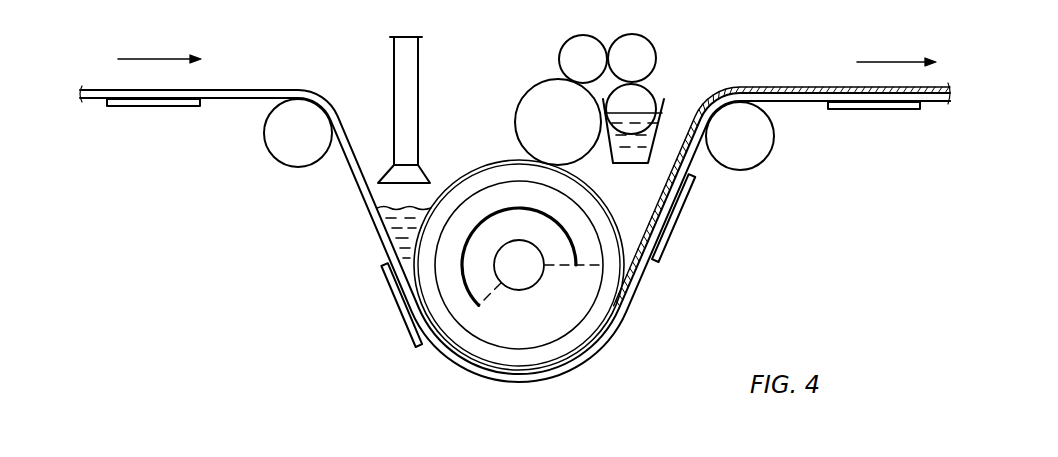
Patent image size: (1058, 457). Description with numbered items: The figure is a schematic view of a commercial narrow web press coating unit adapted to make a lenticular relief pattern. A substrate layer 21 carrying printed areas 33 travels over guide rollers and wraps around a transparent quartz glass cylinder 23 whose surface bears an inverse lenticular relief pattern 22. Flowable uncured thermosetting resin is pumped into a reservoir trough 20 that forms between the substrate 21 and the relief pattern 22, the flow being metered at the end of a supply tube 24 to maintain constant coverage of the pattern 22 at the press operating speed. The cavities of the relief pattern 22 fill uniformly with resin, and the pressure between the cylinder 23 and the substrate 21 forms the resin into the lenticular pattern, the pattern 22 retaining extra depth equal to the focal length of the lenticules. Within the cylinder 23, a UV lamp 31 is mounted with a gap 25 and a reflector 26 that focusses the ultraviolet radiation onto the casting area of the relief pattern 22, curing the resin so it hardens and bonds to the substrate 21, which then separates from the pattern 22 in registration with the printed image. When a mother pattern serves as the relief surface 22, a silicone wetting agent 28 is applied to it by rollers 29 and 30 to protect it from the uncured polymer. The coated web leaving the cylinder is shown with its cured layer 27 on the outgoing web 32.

The reservoir trough 20 is at (397, 230).
The substrate layer 21 is at (235, 99).
The relief pattern 22 is at (560, 365).
The quartz glass cylinder 23 is at (500, 355).
The supply tube 24 is at (394, 95).
The gap 25 is at (577, 316).
The reflector 26 is at (567, 238).
The coating layer 27 is at (787, 87).
The wetting agent 28 is at (640, 148).
The roller 29 is at (638, 56).
The roller 30 is at (543, 101).
The UV lamp 31 is at (519, 267).
The coated web 32 is at (828, 101).
The printed areas 33 is at (153, 107).